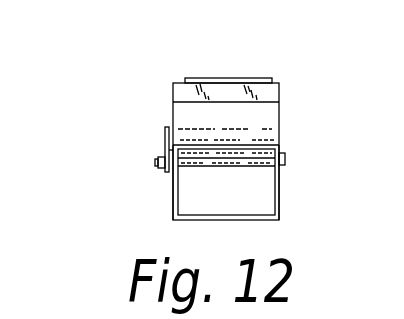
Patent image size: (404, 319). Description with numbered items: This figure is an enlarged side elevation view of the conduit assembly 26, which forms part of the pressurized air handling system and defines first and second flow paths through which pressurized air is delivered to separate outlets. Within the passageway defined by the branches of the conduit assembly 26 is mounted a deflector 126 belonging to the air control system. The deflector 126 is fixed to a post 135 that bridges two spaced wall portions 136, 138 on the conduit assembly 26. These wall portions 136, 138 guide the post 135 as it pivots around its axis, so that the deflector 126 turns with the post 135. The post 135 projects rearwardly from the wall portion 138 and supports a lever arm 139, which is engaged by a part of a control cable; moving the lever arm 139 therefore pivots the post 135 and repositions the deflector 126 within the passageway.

The conduit assembly 26 is at (292, 84).
The deflector 126 is at (248, 190).
The post 135 is at (237, 160).
The wall portion 136 is at (280, 178).
The wall portion 138 is at (173, 185).
The lever arm 139 is at (165, 143).